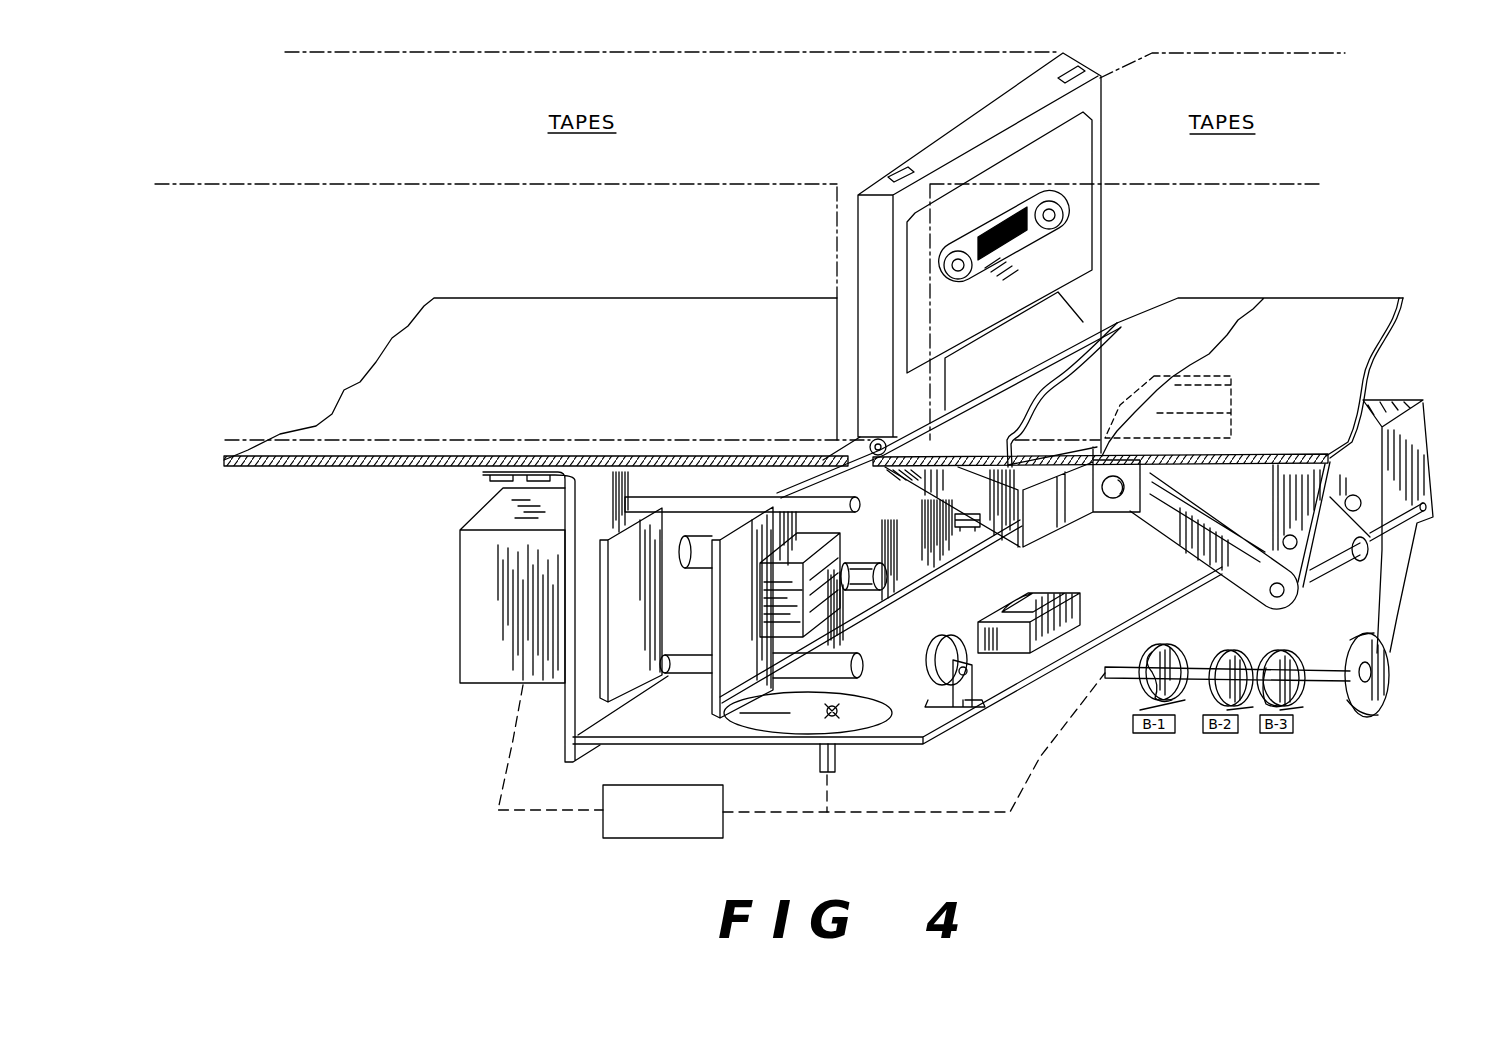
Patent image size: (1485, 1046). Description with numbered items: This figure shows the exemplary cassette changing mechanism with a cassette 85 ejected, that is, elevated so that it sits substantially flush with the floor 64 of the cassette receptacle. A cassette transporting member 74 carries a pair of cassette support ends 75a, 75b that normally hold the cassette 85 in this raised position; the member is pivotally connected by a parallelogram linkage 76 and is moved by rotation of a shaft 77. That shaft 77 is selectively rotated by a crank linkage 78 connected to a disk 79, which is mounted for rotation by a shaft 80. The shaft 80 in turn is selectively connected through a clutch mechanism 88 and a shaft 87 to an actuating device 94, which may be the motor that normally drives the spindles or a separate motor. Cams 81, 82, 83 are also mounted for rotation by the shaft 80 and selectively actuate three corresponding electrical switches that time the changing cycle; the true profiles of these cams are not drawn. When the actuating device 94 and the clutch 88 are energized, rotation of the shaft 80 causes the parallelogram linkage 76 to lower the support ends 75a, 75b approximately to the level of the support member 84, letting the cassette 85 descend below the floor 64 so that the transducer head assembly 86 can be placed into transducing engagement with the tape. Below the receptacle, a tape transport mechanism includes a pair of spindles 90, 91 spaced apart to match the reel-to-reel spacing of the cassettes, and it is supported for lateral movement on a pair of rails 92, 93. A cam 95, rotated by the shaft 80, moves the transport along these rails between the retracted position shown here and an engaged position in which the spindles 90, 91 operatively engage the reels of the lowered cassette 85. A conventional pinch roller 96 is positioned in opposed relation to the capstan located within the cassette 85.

The floor 64 is at (687, 455).
The cassette transporting member 74 is at (1014, 530).
The cassette support end 75a is at (1090, 352).
The cassette support end 75b is at (913, 454).
The parallelogram linkage 76 is at (1230, 572).
The shaft 77 is at (1328, 574).
The crank linkage 78 is at (1402, 458).
The disk 79 is at (1390, 665).
The shaft 80 is at (1125, 667).
The cam 81 is at (1170, 652).
The cam 82 is at (1238, 651).
The cam 83 is at (1290, 651).
The support member 84 is at (886, 644).
The cassette 85 is at (1098, 238).
The transducer head assembly 86 is at (1053, 597).
The shaft 87 is at (570, 815).
The clutch mechanism 88 is at (690, 785).
The spindle 90 is at (975, 531).
The spindle 91 is at (882, 570).
The rail 92 is at (640, 497).
The rail 93 is at (692, 672).
The actuating device 94 is at (492, 683).
The cam 95 is at (945, 707).
The pinch roller 96 is at (959, 636).